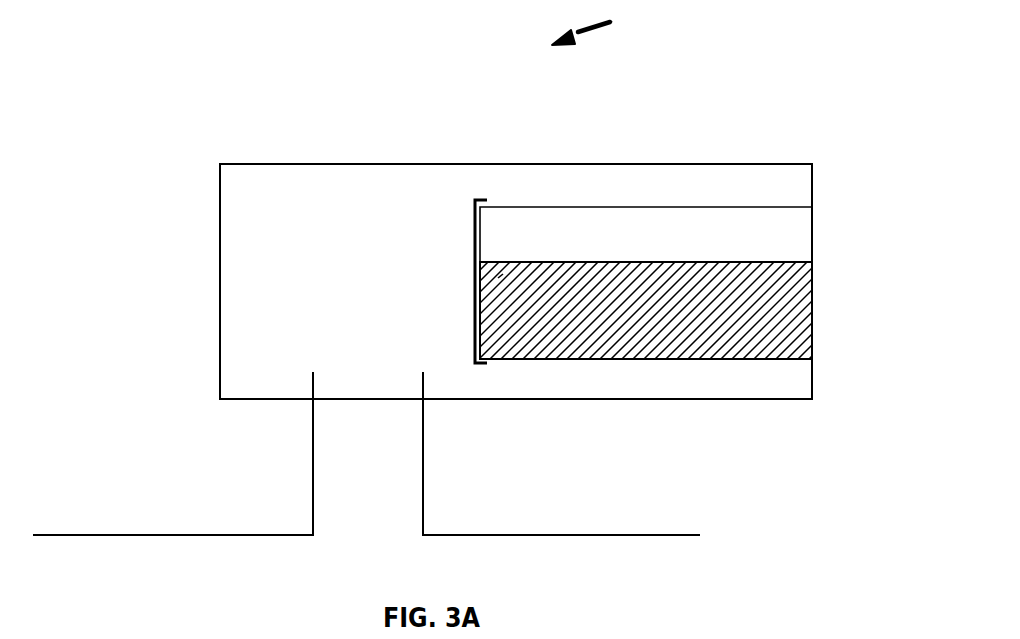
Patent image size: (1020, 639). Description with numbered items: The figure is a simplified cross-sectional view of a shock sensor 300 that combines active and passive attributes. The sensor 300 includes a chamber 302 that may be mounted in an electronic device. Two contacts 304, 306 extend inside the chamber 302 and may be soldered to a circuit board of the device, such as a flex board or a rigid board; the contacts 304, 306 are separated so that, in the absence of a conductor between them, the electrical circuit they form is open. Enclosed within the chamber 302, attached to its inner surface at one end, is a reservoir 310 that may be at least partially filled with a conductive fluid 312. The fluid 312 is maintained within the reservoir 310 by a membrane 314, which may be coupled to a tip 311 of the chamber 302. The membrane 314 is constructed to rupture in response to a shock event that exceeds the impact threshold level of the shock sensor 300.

The shock sensor 300 is at (610, 23).
The chamber 302 is at (294, 164).
The contact 304 is at (313, 432).
The contact 306 is at (424, 432).
The reservoir 310 is at (783, 248).
The tip 311 is at (498, 278).
The conductive fluid 312 is at (783, 298).
The membrane 314 is at (476, 249).